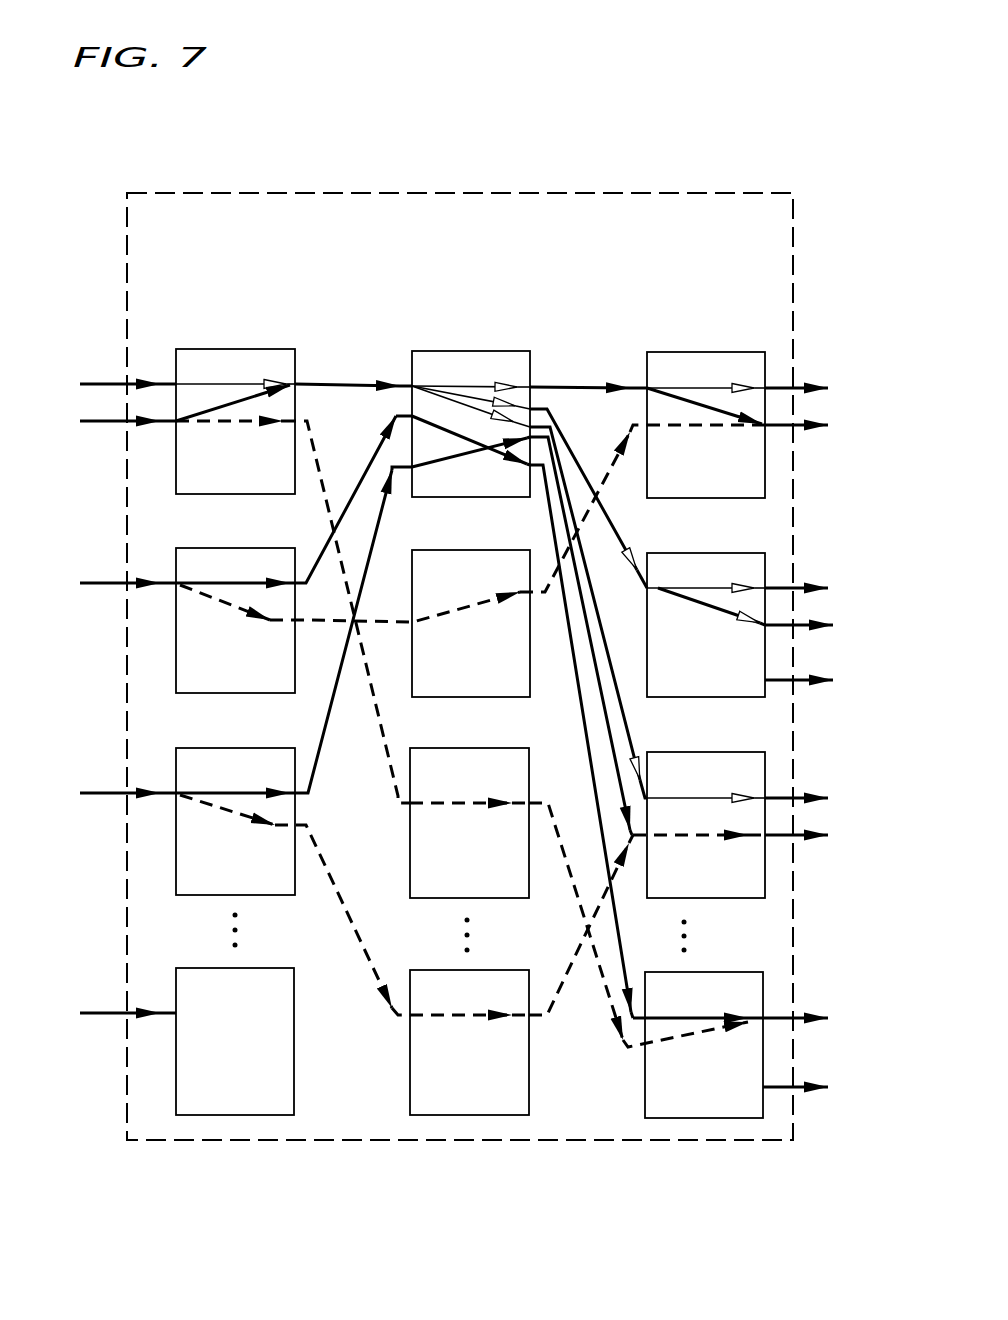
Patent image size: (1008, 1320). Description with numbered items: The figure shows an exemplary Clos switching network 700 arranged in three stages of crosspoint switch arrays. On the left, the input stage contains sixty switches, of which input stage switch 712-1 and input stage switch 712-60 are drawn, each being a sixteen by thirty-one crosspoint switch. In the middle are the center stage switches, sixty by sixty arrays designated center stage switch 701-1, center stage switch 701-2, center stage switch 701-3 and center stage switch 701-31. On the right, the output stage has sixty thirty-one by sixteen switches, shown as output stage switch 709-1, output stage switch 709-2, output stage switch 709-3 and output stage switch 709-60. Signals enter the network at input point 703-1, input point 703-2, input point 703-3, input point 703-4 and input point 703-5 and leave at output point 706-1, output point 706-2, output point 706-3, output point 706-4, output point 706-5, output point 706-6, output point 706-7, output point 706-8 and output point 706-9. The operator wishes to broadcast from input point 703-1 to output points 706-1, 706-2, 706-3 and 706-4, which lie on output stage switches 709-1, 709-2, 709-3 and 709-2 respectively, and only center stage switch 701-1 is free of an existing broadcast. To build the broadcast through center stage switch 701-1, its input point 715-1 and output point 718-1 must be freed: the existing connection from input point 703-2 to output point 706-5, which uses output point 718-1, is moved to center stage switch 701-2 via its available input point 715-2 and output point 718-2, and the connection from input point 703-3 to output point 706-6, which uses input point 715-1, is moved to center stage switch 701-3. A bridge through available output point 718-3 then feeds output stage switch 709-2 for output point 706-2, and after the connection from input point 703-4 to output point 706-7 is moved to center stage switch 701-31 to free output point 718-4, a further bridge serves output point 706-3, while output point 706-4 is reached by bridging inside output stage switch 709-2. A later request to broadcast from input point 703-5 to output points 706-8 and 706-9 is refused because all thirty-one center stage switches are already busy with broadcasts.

The Clos switching network 700 is at (355, 193).
The input point 703-1 is at (107, 382).
The input point 703-2 is at (106, 581).
The input point 703-3 is at (107, 421).
The input point 703-4 is at (106, 791).
The input point 703-5 is at (106, 1011).
The input stage switch 712-1 is at (232, 349).
The input stage switch 712-60 is at (285, 968).
The input point of center stage switch 715-1 is at (397, 383).
The input point of center stage switch 715-2 is at (410, 623).
The center stage switch 701-1 is at (455, 351).
The center stage switch 701-2 is at (428, 552).
The center stage switch 701-3 is at (425, 758).
The center stage switch 701-31 is at (522, 972).
The output point of center stage switch 718-1 is at (536, 385).
The output point of center stage switch 718-2 is at (548, 588).
The output point of center stage switch 718-3 is at (547, 409).
The output point of center stage switch 718-4 is at (552, 427).
The output stage switch 709-1 is at (740, 352).
The output stage switch 709-2 is at (733, 558).
The output stage switch 709-3 is at (714, 760).
The output stage switch 709-60 is at (733, 974).
The output point 706-1 is at (825, 388).
The output point 706-2 is at (825, 588).
The output point 706-3 is at (822, 797).
The output point 706-4 is at (833, 624).
The output point 706-5 is at (825, 425).
The output point 706-6 is at (829, 1018).
The output point 706-7 is at (820, 837).
The output point 706-8 is at (822, 1088).
The output point 706-9 is at (833, 679).